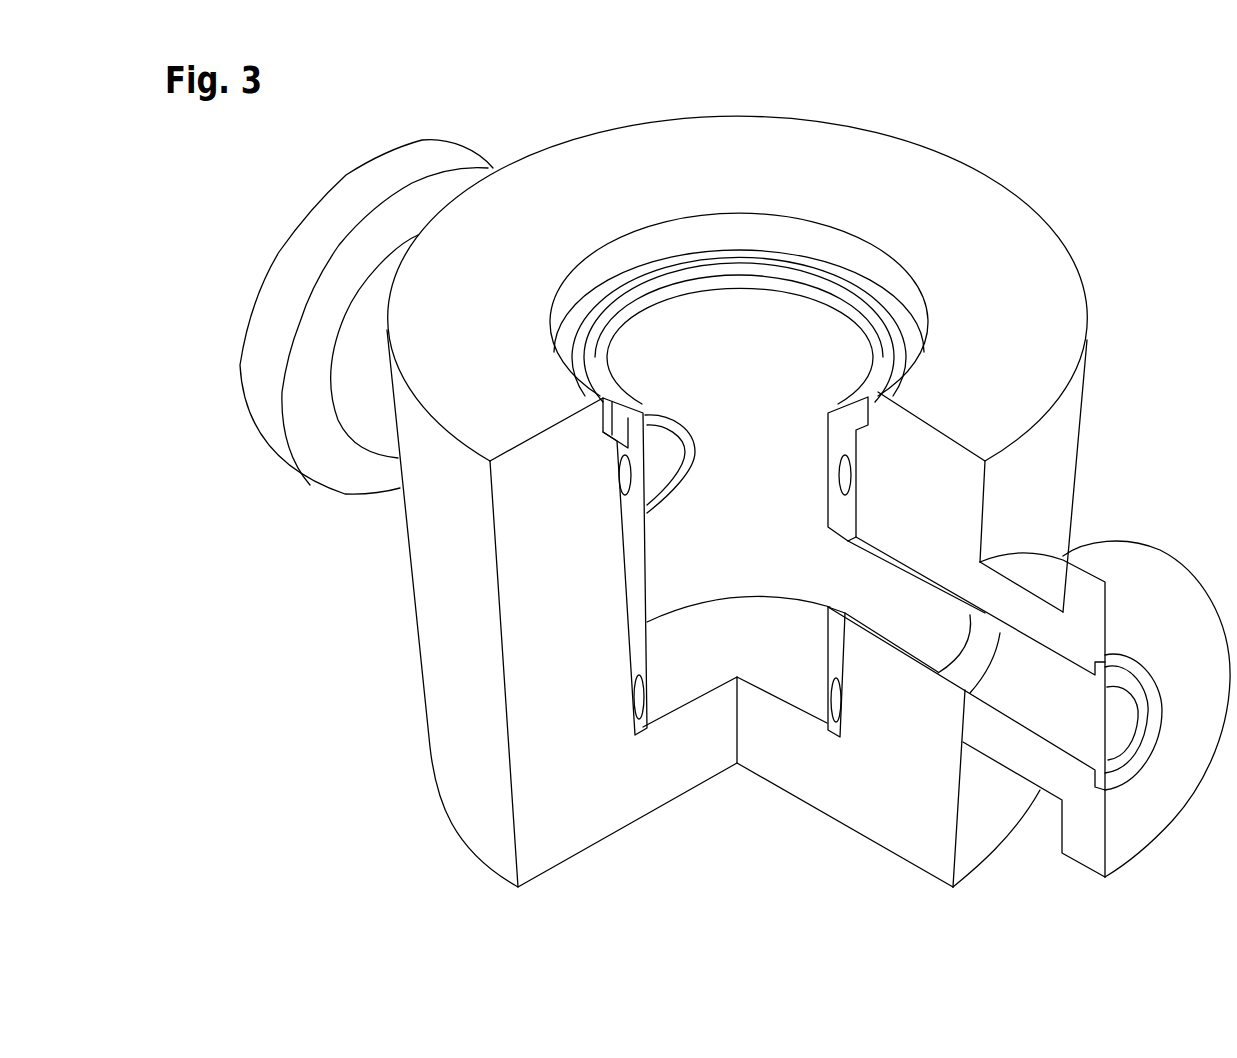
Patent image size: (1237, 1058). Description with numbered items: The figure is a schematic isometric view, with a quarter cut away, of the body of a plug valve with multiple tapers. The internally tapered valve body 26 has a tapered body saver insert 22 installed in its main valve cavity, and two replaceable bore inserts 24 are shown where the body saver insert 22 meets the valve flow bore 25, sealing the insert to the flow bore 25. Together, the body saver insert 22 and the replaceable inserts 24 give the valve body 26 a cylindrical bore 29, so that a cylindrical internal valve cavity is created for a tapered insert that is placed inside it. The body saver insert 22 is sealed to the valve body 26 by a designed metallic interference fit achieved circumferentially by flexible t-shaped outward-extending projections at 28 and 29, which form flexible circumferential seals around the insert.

The tapered body saver insert 22 is at (637, 570).
The bore insert 24 is at (673, 420).
The valve flow bore 25 is at (1022, 693).
The valve body 26 is at (583, 165).
The flexible t-shaped outward-extending projection 28 is at (615, 457).
The cylindrical bore 29 is at (825, 343).